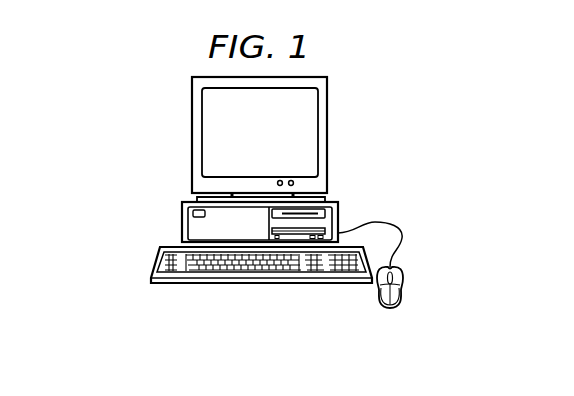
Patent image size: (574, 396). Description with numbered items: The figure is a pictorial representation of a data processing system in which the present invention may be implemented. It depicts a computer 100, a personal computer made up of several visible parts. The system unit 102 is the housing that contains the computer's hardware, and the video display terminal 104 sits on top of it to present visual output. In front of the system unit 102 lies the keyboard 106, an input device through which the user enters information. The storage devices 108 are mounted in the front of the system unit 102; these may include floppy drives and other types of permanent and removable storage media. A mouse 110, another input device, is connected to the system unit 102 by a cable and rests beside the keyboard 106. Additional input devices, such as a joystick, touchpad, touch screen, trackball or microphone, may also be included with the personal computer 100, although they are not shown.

The computer 100 is at (135, 127).
The system unit 102 is at (182, 220).
The video display terminal 104 is at (327, 135).
The keyboard 106 is at (180, 283).
The storage devices 108 is at (310, 210).
The mouse 110 is at (390, 308).